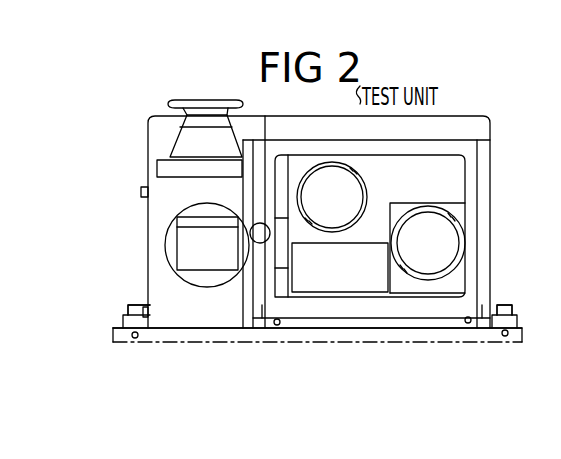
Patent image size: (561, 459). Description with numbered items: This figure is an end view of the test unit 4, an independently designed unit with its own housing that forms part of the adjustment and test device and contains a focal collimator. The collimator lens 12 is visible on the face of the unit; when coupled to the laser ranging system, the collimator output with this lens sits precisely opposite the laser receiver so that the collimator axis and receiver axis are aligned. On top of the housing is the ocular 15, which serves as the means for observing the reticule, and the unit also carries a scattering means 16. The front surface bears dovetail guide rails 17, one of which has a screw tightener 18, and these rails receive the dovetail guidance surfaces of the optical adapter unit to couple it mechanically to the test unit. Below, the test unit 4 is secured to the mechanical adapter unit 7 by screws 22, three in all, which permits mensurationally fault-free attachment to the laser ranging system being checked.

The test unit 4 is at (460, 102).
The mechanical adapter unit 7 is at (238, 333).
The collimator lens 12 is at (452, 240).
The ocular 15 is at (218, 80).
The scattering means 16 is at (338, 178).
The dovetail guide rail 17 is at (262, 318).
The screw tightener 18 is at (257, 238).
The screws 22 is at (139, 305).